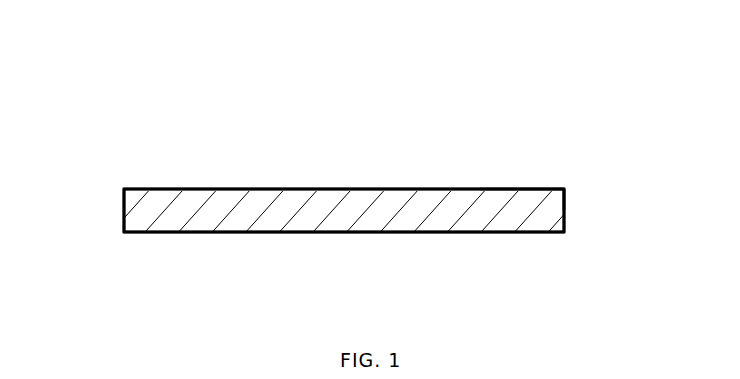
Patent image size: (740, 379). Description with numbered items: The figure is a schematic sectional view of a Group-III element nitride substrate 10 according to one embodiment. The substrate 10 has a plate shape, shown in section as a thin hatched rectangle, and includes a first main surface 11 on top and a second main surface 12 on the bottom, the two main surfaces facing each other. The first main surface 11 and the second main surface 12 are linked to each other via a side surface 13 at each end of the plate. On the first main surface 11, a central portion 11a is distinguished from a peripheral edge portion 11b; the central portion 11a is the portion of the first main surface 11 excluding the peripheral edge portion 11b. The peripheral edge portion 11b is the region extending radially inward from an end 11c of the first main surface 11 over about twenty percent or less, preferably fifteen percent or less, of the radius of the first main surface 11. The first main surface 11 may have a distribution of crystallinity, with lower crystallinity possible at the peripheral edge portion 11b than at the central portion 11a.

The Group-III element nitride substrate 10 is at (516, 75).
The first main surface 11 is at (176, 189).
The central portion 11a is at (393, 189).
The peripheral edge portion 11b is at (542, 189).
The end 11c is at (564, 189).
The second main surface 12 is at (167, 232).
The side surface 13 is at (124, 214).